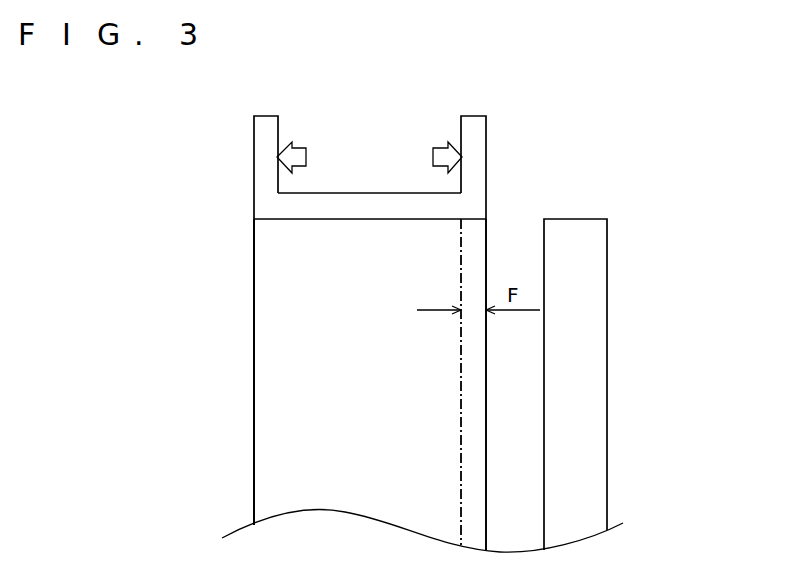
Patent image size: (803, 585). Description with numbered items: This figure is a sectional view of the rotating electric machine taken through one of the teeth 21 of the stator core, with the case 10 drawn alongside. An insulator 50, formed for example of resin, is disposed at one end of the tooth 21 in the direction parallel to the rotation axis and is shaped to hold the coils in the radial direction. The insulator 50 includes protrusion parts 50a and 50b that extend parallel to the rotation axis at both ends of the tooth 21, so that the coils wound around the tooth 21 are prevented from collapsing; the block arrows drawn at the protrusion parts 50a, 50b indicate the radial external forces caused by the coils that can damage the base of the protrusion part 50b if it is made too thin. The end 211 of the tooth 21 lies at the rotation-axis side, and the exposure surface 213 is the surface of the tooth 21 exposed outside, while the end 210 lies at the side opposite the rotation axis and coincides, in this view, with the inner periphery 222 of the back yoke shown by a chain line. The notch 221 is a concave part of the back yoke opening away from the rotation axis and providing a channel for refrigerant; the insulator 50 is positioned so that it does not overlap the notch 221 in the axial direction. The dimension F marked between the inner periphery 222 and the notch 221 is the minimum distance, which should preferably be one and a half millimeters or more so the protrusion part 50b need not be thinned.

The case 10 is at (598, 287).
The teeth 21 is at (265, 306).
The insulator 50 is at (374, 140).
The protrusion part 50a is at (258, 163).
The protrusion part 50b is at (478, 150).
The end of tooth 210 is at (461, 262).
The end of tooth 211 is at (254, 262).
The exposure surface 213 is at (208, 372).
The notch 221 is at (518, 235).
The inner periphery 222 is at (414, 382).